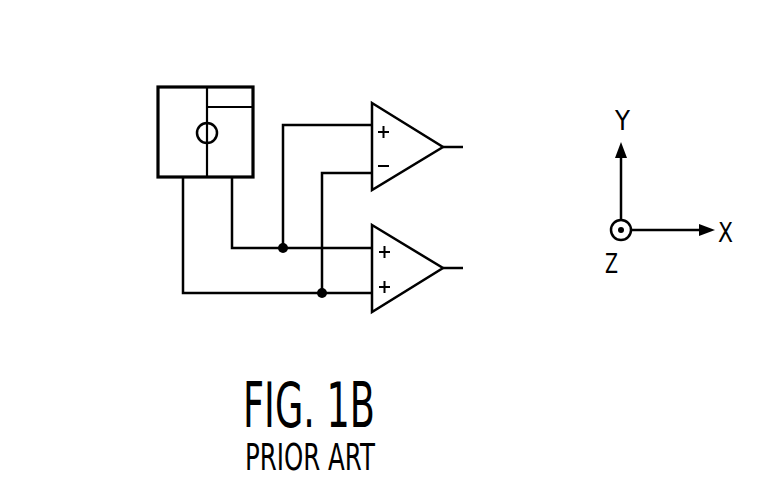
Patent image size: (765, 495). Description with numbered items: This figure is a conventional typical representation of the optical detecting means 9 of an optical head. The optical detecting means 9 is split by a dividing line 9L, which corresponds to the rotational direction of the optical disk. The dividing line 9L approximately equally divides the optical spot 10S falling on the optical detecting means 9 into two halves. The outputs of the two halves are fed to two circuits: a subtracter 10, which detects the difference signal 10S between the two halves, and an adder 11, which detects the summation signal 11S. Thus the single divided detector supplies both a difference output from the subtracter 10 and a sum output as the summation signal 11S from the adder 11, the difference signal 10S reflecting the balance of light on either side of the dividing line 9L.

The optical detecting means 9 is at (233, 59).
The dividing line 9L is at (253, 100).
The subtracter 10 is at (407, 122).
The optical spot / difference signal 10S is at (197, 133).
The adder 11 is at (417, 248).
The summation signal 11S is at (475, 267).